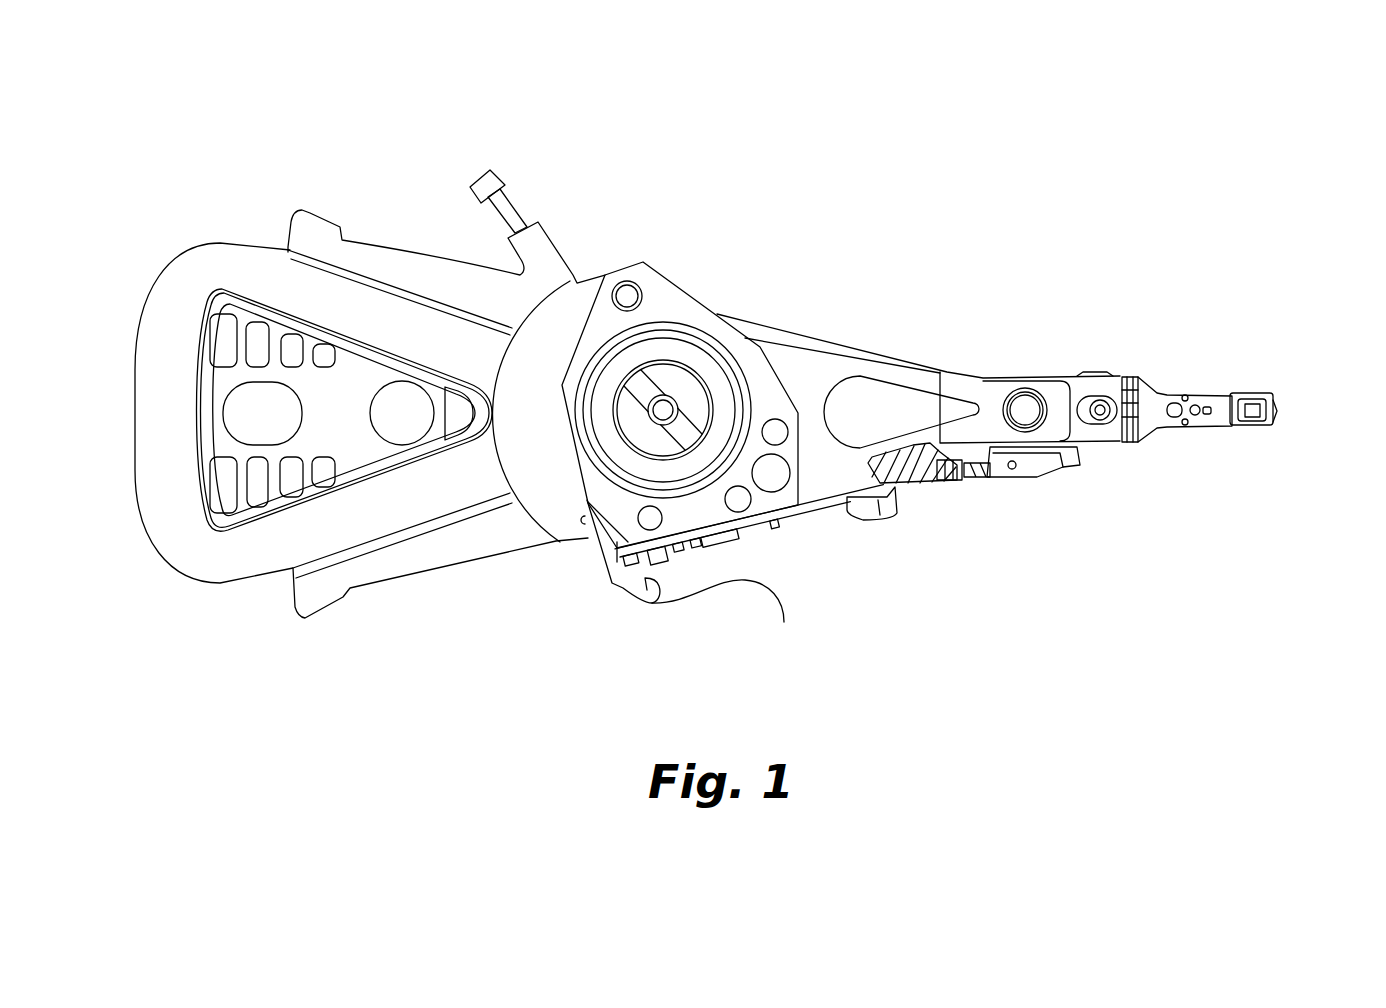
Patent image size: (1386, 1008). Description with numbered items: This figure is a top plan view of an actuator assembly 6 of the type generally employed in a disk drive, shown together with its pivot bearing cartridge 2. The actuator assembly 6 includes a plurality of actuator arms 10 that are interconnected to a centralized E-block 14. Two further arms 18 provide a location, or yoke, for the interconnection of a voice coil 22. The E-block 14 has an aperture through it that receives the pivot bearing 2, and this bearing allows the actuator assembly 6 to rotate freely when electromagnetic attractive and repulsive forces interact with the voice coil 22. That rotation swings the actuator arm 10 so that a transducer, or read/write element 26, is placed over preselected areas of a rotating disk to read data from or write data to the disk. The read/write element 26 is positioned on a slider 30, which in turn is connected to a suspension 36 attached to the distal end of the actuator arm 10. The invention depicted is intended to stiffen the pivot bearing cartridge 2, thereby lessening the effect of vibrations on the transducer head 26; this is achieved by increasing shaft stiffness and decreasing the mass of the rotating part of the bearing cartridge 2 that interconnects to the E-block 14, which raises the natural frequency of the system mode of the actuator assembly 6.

The pivot bearing cartridge 2 is at (664, 408).
The actuator assembly 6 is at (800, 268).
The actuator arm 10 is at (820, 363).
The E-block 14 is at (649, 297).
The arms 18 is at (345, 252).
The voice coil 22 is at (192, 273).
The read/write element 26 is at (1257, 412).
The slider 30 is at (1245, 391).
The suspension 36 is at (1169, 377).